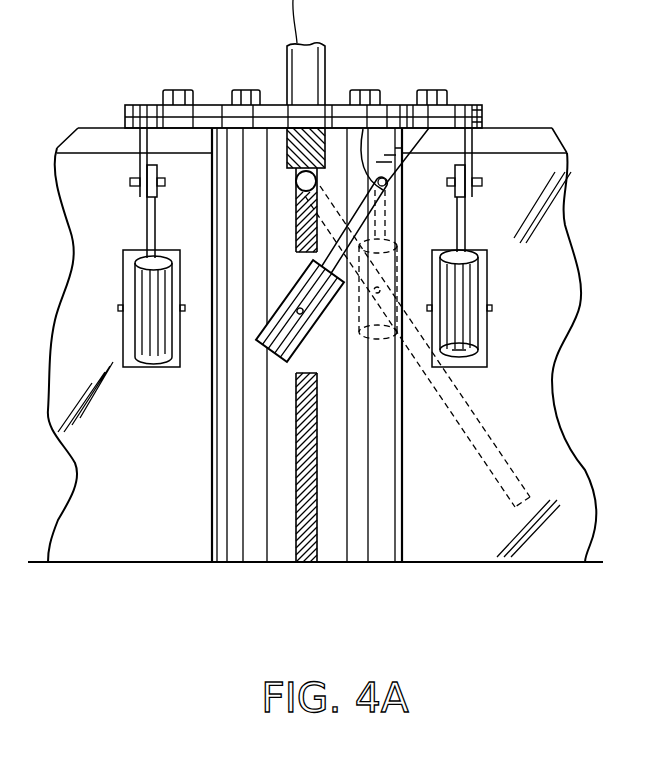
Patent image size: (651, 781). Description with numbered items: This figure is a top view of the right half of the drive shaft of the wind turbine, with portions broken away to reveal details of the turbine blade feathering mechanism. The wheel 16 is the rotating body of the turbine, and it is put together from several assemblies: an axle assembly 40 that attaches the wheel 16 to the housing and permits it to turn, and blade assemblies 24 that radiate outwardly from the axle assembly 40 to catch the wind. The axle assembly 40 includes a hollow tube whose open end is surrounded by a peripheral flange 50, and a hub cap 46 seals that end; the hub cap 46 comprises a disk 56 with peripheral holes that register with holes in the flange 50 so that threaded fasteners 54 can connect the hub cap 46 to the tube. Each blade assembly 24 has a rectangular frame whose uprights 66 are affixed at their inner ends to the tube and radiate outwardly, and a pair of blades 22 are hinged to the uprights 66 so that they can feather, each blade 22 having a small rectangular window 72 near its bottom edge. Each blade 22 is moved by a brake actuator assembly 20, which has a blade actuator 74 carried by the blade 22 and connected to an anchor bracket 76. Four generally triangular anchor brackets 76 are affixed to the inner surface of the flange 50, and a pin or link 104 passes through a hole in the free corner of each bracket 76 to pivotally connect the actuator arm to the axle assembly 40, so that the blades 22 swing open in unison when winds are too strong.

The wheel 16 is at (79, 126).
The brake actuator assembly 20 is at (138, 406).
The blade 22 is at (102, 550).
The blade assembly 24 is at (556, 123).
The axle assembly 40 is at (213, 525).
The hub cap 46 is at (137, 104).
The peripheral flange 50 is at (487, 123).
The threaded fastener 54 is at (177, 89).
The disk 56 is at (482, 107).
The upright 66 is at (58, 148).
The rectangular window 72 is at (122, 290).
The blade actuator 74 is at (138, 335).
The anchor bracket 76 is at (127, 164).
The pin or link 104 is at (130, 182).